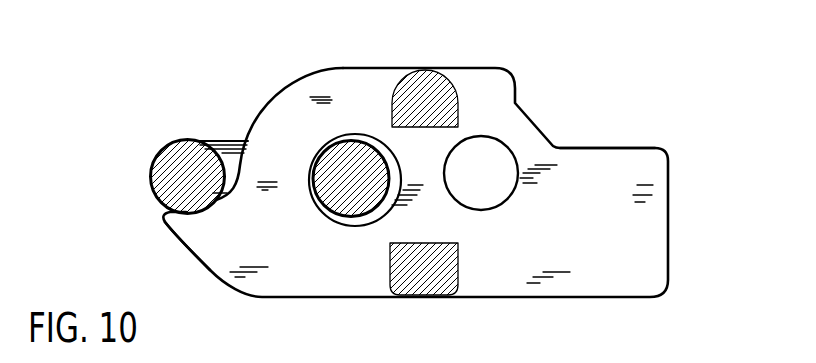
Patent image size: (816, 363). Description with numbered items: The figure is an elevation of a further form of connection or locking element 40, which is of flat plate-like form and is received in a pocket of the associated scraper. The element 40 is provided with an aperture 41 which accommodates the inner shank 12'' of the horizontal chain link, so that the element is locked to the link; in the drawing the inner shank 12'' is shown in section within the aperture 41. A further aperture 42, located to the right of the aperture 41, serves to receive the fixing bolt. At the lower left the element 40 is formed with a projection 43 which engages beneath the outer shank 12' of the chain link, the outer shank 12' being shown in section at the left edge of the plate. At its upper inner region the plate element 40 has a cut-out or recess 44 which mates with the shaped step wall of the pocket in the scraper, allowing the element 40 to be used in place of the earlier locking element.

The locking element 40 is at (318, 83).
The outer shank 12' is at (188, 150).
The inner shank 12'' is at (351, 238).
The aperture 41 is at (312, 157).
The further aperture 42 is at (507, 155).
The projection 43 is at (183, 240).
The cut-out or recess 44 is at (598, 148).